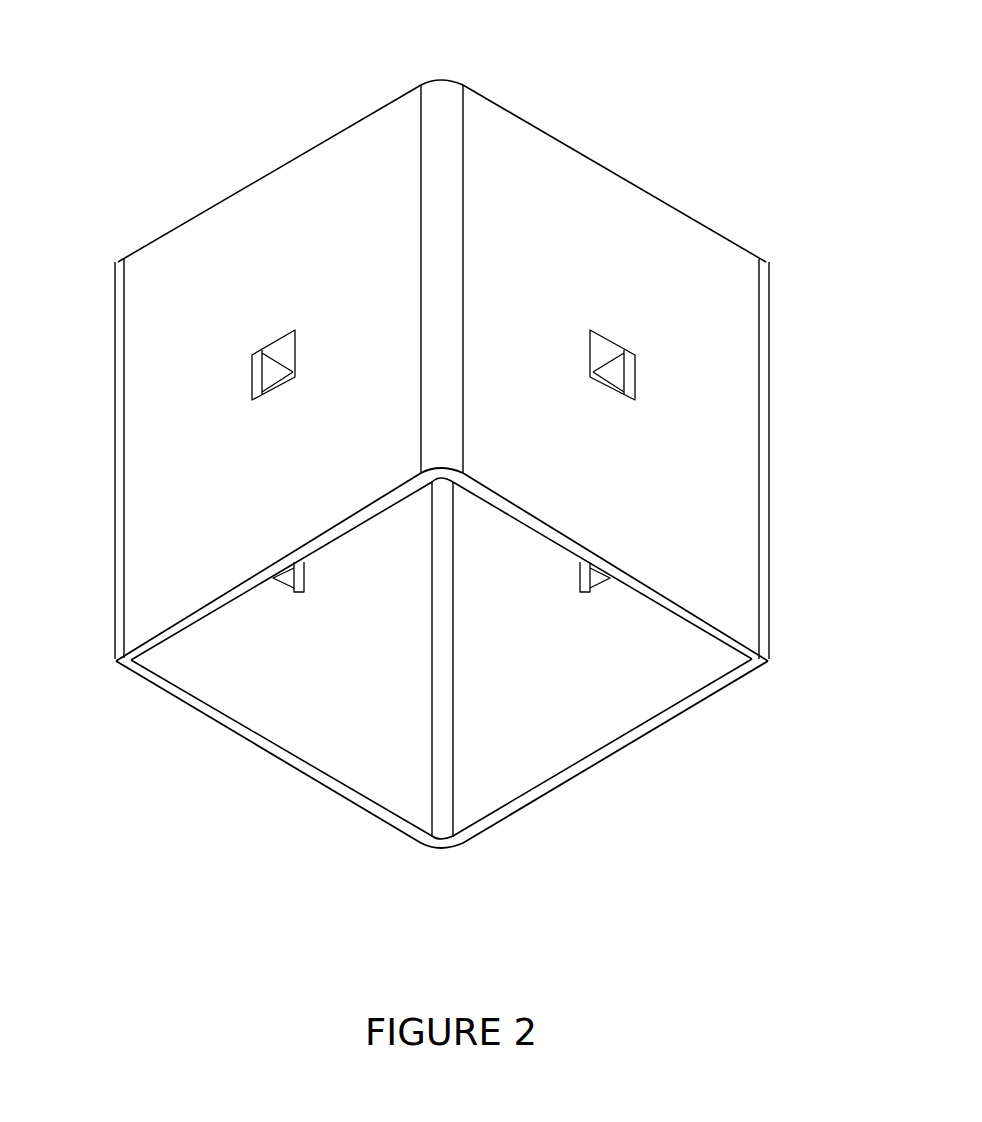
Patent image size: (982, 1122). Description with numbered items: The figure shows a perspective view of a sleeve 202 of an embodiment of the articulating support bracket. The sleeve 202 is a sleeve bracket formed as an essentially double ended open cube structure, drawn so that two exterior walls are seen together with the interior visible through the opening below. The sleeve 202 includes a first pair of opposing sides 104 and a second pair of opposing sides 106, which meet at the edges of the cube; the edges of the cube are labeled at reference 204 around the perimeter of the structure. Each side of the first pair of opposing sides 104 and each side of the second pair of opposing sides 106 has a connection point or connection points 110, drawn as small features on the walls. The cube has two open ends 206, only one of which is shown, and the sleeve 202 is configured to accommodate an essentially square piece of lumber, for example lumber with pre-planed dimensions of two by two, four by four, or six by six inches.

The sleeve 202 is at (172, 46).
The first pair of opposing sides 104 is at (328, 247).
The second pair of opposing sides 106 is at (626, 252).
The connection points 110 is at (252, 376).
The rounded corner edge 204 is at (440, 79).
The open ends 206 is at (345, 727).